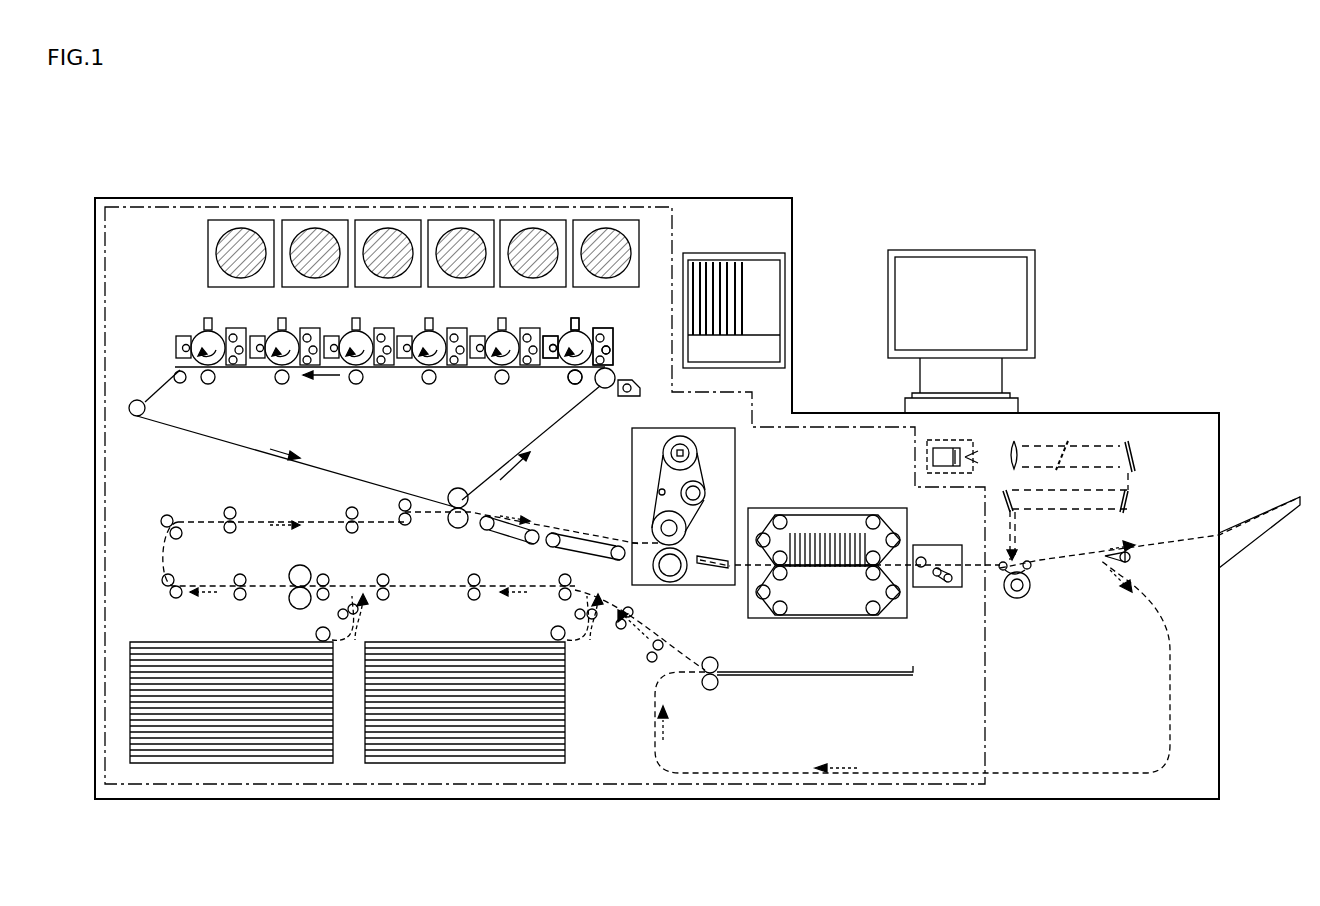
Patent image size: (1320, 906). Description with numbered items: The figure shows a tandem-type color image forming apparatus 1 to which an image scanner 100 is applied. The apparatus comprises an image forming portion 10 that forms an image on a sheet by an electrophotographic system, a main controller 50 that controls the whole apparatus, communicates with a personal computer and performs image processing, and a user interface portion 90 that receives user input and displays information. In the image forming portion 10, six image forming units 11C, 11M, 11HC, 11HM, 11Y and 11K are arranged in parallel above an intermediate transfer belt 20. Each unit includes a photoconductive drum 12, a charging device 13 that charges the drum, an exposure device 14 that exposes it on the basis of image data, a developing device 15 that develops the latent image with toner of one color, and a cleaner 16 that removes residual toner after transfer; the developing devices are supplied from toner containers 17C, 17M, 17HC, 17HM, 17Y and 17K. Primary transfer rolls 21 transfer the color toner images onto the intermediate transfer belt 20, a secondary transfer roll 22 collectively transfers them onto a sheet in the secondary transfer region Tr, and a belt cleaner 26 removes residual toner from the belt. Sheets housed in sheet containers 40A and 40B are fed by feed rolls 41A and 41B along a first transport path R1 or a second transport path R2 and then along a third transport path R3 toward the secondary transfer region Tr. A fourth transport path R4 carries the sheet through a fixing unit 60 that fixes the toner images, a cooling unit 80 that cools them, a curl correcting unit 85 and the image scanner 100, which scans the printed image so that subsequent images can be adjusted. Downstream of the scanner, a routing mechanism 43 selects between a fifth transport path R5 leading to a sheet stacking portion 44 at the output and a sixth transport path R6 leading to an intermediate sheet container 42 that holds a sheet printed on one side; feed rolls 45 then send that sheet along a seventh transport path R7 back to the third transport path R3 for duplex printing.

The image forming apparatus 1 is at (757, 178).
The image forming portion 10 is at (665, 185).
The image forming unit 11K is at (240, 316).
The image forming unit 11Y is at (316, 316).
The image forming unit 11HM is at (392, 316).
The image forming unit 11HC is at (465, 316).
The image forming unit 11M is at (536, 316).
The image forming unit 11C is at (645, 340).
The photoconductive drum 12 is at (555, 360).
The charging device 13 is at (572, 318).
The exposure device 14 is at (600, 329).
The developing device 15 is at (611, 335).
The cleaner 16 is at (558, 372).
The toner container 17K is at (243, 220).
The toner container 17Y is at (317, 220).
The toner container 17HM is at (390, 220).
The toner container 17HC is at (462, 220).
The toner container 17M is at (535, 220).
The toner container 17C is at (607, 220).
The intermediate transfer belt 20 is at (248, 450).
The primary transfer roll 21 is at (210, 384).
The secondary transfer roll 22 is at (456, 530).
The belt cleaner 26 is at (610, 390).
The secondary transfer region Tr is at (480, 500).
The sheet container 40A is at (160, 642).
The sheet container 40B is at (440, 642).
The feed roll 41A is at (316, 634).
The feed roll 41B is at (551, 634).
The intermediate sheet container 42 is at (855, 678).
The routing mechanism 43 is at (1105, 565).
The sheet stacking portion 44 is at (1262, 550).
The feed roll 45 is at (708, 656).
The main controller 50 is at (736, 253).
The fixing unit 60 is at (652, 428).
The cooling unit 80 is at (828, 508).
The curl correcting unit 85 is at (940, 546).
The user interface portion 90 is at (976, 250).
The image scanner 100 is at (1080, 440).
The first transport path R1 is at (344, 642).
The second transport path R2 is at (595, 642).
The third transport path R3 is at (205, 582).
The fourth transport path R4 is at (560, 525).
The fifth transport path R5 is at (1185, 530).
The sixth transport path R6 is at (740, 770).
The seventh transport path R7 is at (655, 638).